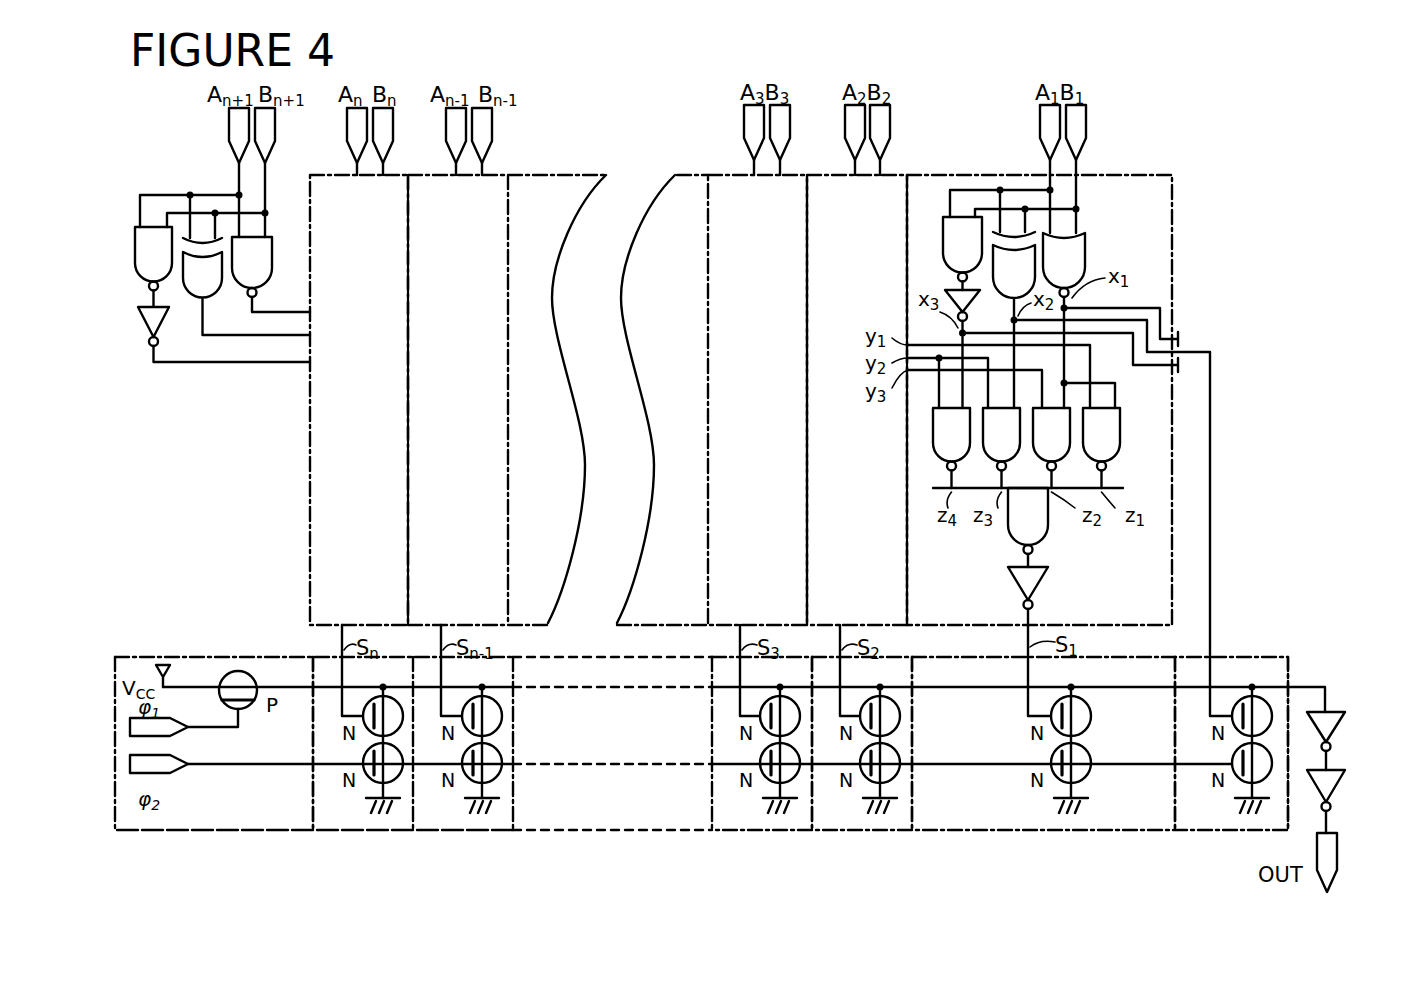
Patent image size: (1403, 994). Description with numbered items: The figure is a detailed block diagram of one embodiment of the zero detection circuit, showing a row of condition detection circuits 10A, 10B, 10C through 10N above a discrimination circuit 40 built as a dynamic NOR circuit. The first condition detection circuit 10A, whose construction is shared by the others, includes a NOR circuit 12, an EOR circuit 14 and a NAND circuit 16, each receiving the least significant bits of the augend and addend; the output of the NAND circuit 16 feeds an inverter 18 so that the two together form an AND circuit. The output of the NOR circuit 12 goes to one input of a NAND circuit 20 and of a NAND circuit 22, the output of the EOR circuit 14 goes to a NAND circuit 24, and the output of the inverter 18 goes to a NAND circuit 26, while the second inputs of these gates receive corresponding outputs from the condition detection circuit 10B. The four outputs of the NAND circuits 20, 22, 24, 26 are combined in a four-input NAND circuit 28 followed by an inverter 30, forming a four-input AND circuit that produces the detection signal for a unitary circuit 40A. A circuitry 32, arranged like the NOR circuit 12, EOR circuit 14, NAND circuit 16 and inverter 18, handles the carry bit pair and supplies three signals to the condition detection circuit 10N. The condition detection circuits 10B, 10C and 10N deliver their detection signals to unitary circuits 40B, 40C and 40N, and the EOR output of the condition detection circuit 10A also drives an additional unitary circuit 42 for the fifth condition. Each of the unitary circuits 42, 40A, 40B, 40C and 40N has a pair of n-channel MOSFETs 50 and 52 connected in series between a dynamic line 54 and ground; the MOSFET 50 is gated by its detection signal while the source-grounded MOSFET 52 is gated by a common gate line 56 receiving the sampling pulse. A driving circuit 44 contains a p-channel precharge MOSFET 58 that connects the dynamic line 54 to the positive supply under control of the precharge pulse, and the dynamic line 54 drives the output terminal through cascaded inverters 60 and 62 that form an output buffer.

The condition detection circuit 10N is at (337, 175).
The condition detection circuit 10C is at (725, 173).
The condition detection circuit 10B is at (837, 173).
The condition detection circuit 10A is at (1130, 173).
The NOR circuit 12 is at (1080, 250).
The EOR circuit 14 is at (1003, 281).
The NAND circuit 16 is at (943, 235).
The inverter 18 is at (947, 300).
The NAND circuit 20 is at (1120, 425).
The NAND circuit 22 is at (1065, 437).
The NAND circuit 24 is at (983, 442).
The NAND circuit 26 is at (940, 460).
The four-input NAND circuit 28 is at (1050, 520).
The inverter 30 is at (1015, 593).
The circuitry 32 is at (200, 375).
The discrimination circuit 40 is at (1242, 652).
The unitary circuit 40N is at (340, 832).
The unitary circuit 40C is at (745, 832).
The unitary circuit 40B is at (850, 832).
The unitary circuit 40A is at (1040, 832).
The additional unitary circuit 42 is at (1248, 832).
The driving circuit 44 is at (210, 832).
The n-channel MOSFET 50 is at (503, 716).
The n-channel MOSFET 52 is at (503, 770).
The dynamic line 54 is at (925, 687).
The common gate line 56 is at (962, 764).
The p-channel precharge MOSFET 58 is at (240, 671).
The inverter 60 is at (1332, 722).
The inverter 62 is at (1338, 790).